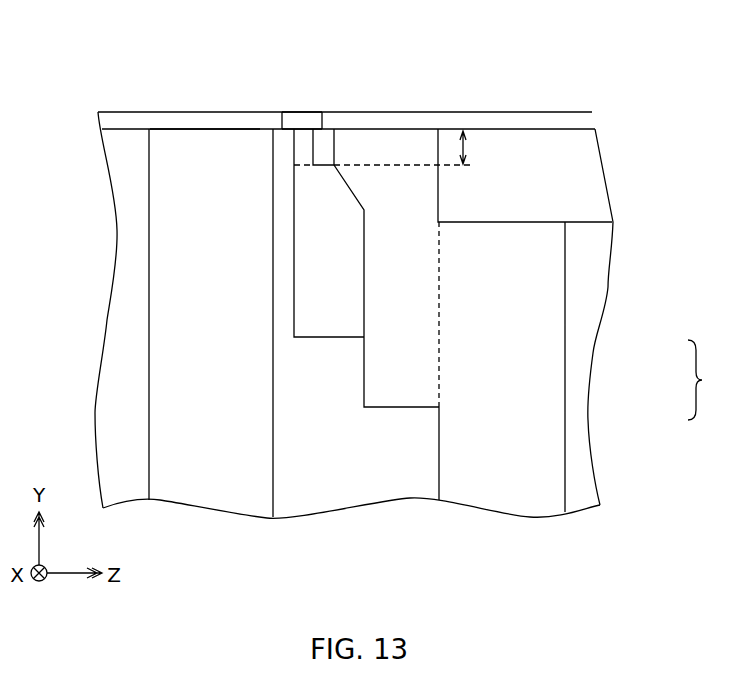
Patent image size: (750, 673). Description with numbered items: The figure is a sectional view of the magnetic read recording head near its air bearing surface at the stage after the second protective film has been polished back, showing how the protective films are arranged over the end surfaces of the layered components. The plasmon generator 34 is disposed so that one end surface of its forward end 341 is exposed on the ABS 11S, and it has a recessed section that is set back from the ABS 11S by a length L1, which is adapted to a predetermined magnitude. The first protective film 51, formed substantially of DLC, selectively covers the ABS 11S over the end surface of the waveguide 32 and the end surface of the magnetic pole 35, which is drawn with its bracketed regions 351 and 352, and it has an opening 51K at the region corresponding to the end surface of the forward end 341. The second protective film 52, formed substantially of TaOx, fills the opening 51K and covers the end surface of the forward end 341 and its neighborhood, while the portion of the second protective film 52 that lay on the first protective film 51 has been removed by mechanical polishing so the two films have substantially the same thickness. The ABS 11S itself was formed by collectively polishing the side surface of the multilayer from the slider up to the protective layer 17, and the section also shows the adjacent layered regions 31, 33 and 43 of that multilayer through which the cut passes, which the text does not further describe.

The ABS 11S is at (180, 116).
The first protective film 51 is at (507, 119).
The opening 51K is at (286, 117).
The second protective film 52 is at (312, 118).
The forward end 341 is at (302, 145).
The second member 33 is at (280, 175).
The plasmon generator 34 is at (305, 235).
The waveguide 32 is at (175, 355).
The first member 31 is at (107, 385).
The length L1 is at (397, 148).
The holding portion 43 is at (597, 173).
The protective layer 17 is at (597, 292).
The first portion of fourth member 351 is at (422, 353).
The second portion of fourth member 352 is at (547, 410).
The magnetic pole 35 is at (709, 380).